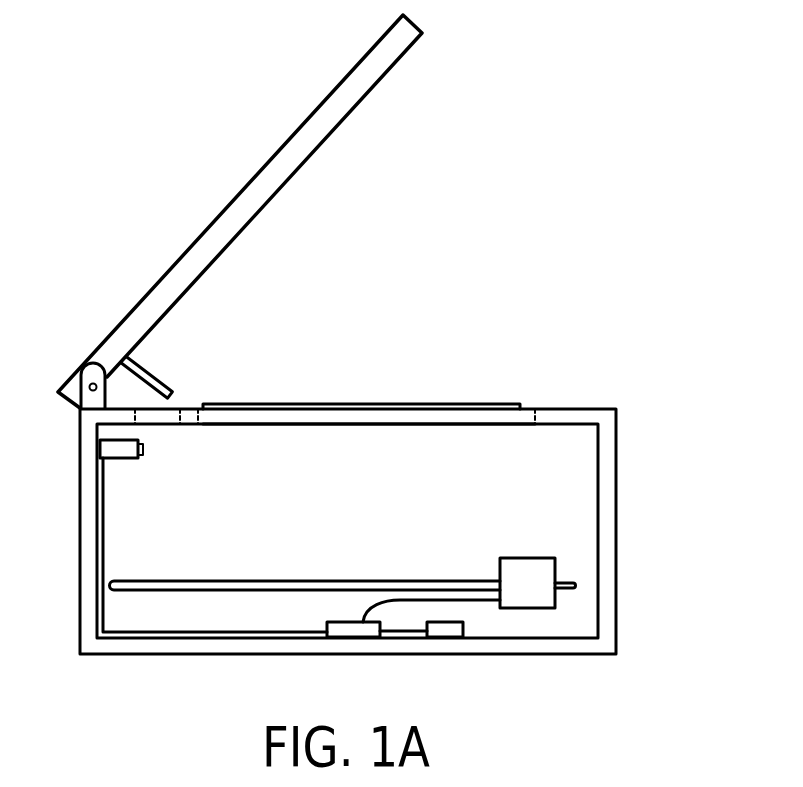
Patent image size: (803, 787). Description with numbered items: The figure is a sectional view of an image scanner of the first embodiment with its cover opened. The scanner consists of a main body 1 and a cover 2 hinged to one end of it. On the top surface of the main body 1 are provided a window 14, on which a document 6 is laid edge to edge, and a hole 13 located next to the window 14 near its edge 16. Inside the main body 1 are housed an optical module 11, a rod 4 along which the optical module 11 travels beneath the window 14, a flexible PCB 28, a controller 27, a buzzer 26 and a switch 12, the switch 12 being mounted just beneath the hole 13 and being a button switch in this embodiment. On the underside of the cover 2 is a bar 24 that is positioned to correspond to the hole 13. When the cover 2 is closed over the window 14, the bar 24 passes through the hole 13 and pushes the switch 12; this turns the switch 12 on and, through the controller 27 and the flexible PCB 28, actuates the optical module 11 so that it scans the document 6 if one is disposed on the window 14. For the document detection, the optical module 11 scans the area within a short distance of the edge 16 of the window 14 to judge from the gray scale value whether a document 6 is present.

The main body 1 is at (616, 545).
The cover 2 is at (235, 195).
The bar 24 is at (160, 380).
The document 6 is at (430, 404).
The window 14 is at (405, 420).
The hole 13 is at (170, 424).
The edge 16 is at (202, 428).
The switch 12 is at (133, 458).
The rod 4 is at (295, 580).
The optical module 11 is at (520, 558).
The controller 27 is at (355, 632).
The buzzer 26 is at (445, 632).
The flexible PCB 28 is at (475, 600).